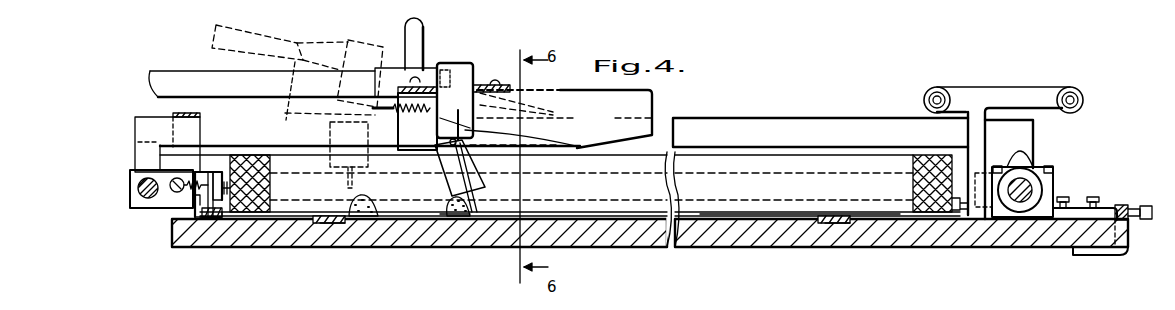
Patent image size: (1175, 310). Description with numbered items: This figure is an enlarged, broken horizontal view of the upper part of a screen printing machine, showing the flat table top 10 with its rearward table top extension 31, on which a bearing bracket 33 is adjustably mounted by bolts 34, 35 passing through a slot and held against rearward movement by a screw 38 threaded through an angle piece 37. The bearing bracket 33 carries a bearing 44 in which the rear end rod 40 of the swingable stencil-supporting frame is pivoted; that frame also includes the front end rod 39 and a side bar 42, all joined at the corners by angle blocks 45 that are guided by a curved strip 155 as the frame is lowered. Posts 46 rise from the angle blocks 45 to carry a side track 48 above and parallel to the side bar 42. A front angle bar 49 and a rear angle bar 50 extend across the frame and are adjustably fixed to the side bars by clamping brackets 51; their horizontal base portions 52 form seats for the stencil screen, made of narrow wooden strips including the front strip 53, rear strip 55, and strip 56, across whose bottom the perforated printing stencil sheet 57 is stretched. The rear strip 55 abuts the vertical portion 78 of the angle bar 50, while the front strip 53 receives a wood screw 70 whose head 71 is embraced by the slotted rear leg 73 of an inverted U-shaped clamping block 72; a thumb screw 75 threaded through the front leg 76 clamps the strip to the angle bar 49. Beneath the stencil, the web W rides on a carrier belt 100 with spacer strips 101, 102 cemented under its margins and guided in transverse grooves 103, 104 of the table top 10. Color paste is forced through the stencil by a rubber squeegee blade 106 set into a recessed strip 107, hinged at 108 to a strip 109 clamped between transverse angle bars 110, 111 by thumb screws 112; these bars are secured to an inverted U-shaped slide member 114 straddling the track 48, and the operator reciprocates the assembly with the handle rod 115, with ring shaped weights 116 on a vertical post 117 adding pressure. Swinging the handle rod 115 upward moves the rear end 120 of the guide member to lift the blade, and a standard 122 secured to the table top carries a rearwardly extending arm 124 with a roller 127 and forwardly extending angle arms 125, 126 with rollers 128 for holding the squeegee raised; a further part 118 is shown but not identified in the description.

The table top 10 is at (413, 238).
The table top extension 31 is at (1073, 252).
The bearing bracket 33 is at (1053, 219).
The bolt 34 is at (1063, 198).
The bolt 35 is at (1093, 198).
The angle piece 37 is at (1120, 257).
The screw 38 is at (1135, 228).
The end rod 39 is at (132, 188).
The rear end rod 40 is at (1033, 187).
The side bar 42 is at (805, 185).
The bearing 44 is at (1027, 173).
The angle block 45 is at (195, 193).
The post 46 is at (137, 155).
The side rod or track 48 is at (857, 125).
The angle bar 49 is at (207, 207).
The angle bar 50 is at (958, 216).
The clamping bracket 51 is at (213, 214).
The horizontal base portion 52 is at (212, 221).
The front strip 53 is at (270, 190).
The rear strip 55 is at (912, 188).
The strip 56 is at (867, 165).
The printing stencil sheet 57 is at (751, 213).
The wood screw 70 is at (243, 160).
The head 71 is at (223, 182).
The clamping block 72 is at (205, 173).
The rear leg 73 is at (205, 222).
The thumb screw 75 is at (172, 182).
The front leg 76 is at (197, 200).
The vertical portion 78 is at (975, 205).
The carrier belt 100 is at (483, 218).
The spacer strip 101 is at (313, 226).
The spacer strip 102 is at (826, 224).
The transverse groove 103 is at (333, 223).
The transverse groove 104 is at (843, 230).
The squeegee blade 106 is at (477, 188).
The recessed strip 107 is at (480, 163).
The hinge 108 is at (538, 147).
The strip 109 is at (443, 128).
The transverse angle bar 110 is at (357, 90).
The transverse angle bar 111 is at (527, 97).
The thumb screw 112 is at (393, 132).
The slide member 114 is at (640, 108).
The handle rod 115 is at (191, 79).
The ring shaped weight 116 is at (428, 70).
The vertical post 117 is at (418, 38).
The material heap 118 is at (445, 202).
The rear end 120 is at (567, 108).
The standard 122 is at (980, 133).
The rearwardly extending arm 124 is at (1015, 95).
The forwardly extending angle arm 125 is at (1060, 93).
The forwardly extending angle arm 126 is at (956, 95).
The roller 127 is at (1084, 91).
The roller 128 is at (929, 95).
The curved strip 155 is at (175, 113).
The web W is at (457, 218).